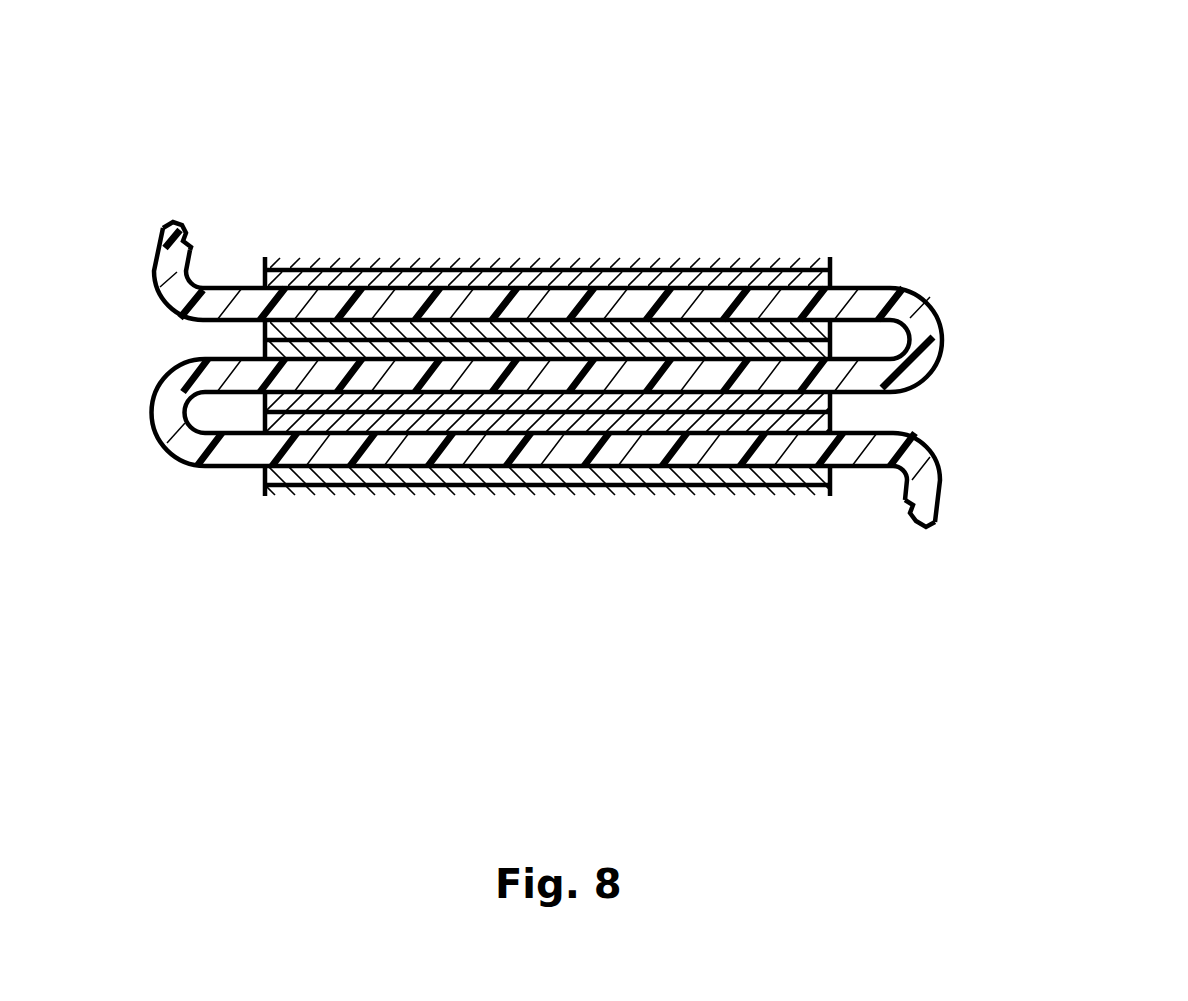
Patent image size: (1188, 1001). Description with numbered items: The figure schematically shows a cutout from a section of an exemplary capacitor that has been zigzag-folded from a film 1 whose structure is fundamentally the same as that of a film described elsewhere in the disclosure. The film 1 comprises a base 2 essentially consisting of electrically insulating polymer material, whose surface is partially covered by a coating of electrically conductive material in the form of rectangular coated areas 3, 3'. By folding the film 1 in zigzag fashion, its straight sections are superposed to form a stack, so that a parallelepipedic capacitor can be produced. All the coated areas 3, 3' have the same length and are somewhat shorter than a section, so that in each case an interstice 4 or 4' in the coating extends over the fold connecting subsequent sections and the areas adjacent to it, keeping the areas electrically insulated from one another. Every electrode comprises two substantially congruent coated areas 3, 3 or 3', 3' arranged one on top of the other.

The film 1 is at (932, 443).
The base 2 is at (323, 303).
The coated area 3 is at (547, 372).
The coated area 3' is at (547, 372).
The interstice 4 is at (591, 372).
The interstice 4' is at (492, 372).